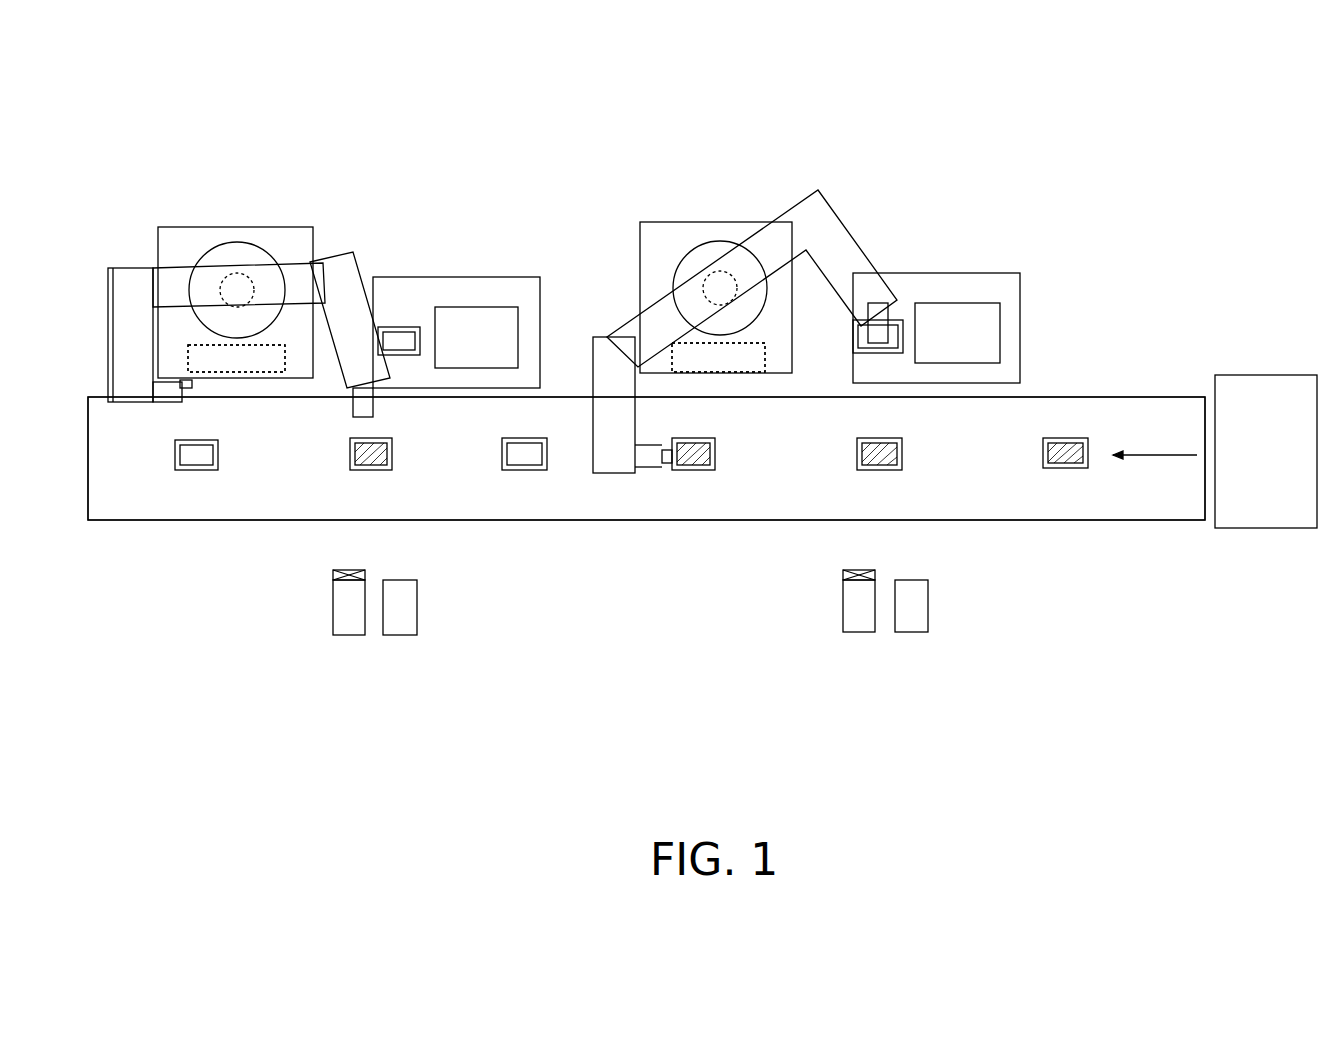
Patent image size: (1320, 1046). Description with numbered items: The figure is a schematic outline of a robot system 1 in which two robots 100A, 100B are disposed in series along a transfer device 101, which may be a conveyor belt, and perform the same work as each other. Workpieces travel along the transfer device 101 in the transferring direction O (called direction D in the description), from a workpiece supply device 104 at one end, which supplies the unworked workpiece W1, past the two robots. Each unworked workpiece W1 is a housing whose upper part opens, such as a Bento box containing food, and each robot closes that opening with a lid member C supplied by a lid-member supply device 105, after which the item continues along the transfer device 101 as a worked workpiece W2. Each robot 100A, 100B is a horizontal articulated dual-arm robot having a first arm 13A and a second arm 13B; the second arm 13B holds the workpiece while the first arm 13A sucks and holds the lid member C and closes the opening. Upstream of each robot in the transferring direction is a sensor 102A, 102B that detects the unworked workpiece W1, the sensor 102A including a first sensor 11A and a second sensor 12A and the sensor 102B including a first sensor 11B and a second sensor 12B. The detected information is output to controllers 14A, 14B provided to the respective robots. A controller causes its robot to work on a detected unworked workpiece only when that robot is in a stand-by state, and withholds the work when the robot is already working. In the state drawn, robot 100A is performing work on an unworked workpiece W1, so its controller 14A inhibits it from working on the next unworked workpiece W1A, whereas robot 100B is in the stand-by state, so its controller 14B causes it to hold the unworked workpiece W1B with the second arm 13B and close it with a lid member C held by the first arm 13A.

The robot system 1 is at (773, 66).
The robot 100A is at (718, 222).
The robot 100B is at (260, 222).
The first arm 13A is at (335, 290).
The second arm 13B is at (124, 293).
The lid member C is at (398, 327).
The lid-member supply device 105 is at (473, 307).
The controller 14A is at (752, 372).
The controller 14B is at (254, 378).
The transfer device 101 is at (1157, 520).
The workpiece supply device 104 is at (1268, 528).
The transferring direction O is at (1152, 455).
The unworked workpiece W1 is at (690, 470).
The worked workpiece W2 is at (197, 470).
The unworked workpiece W1A is at (878, 470).
The unworked workpiece W1B is at (370, 470).
The first sensor 11A is at (915, 632).
The second sensor 12A is at (860, 632).
The sensor 102A is at (950, 732).
The first sensor 11B is at (400, 635).
The second sensor 12B is at (348, 635).
The sensor 102B is at (437, 732).